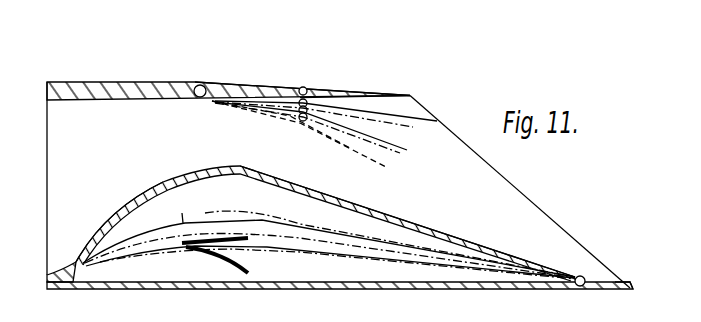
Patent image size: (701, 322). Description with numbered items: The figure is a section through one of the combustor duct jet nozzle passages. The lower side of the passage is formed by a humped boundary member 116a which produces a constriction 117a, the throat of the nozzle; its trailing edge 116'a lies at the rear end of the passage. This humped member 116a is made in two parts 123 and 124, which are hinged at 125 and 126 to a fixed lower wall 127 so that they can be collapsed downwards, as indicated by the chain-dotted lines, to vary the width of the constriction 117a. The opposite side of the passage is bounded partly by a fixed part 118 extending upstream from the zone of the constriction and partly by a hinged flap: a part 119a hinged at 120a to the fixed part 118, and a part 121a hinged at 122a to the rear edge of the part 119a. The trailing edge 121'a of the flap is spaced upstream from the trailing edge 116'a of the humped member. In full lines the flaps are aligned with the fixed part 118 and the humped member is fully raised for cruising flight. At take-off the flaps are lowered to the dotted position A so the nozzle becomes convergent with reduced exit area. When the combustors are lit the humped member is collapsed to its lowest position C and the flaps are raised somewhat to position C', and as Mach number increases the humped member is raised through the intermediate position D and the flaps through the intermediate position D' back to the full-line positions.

The fixed part 118 is at (102, 82).
The constriction 117a is at (212, 149).
The hinge 120a is at (201, 85).
The flap part 119a is at (278, 83).
The hinge 122a is at (305, 86).
The flap part 121a is at (380, 91).
The trailing edge of flap 121'a is at (520, 176).
The humped boundary member 116a is at (137, 194).
The humped member part 123 is at (107, 218).
The humped member part 124 is at (353, 207).
The hinge 125 is at (75, 262).
The fixed lower wall 127 is at (185, 288).
The hinge 126 is at (579, 276).
The trailing edge of humped member 116'a is at (621, 263).
The intermediate flap position D' is at (344, 115).
The raised flap position C' is at (327, 133).
The lowered flap position A is at (388, 168).
The intermediate humped member position D is at (329, 234).
The lowest humped member position C is at (330, 263).